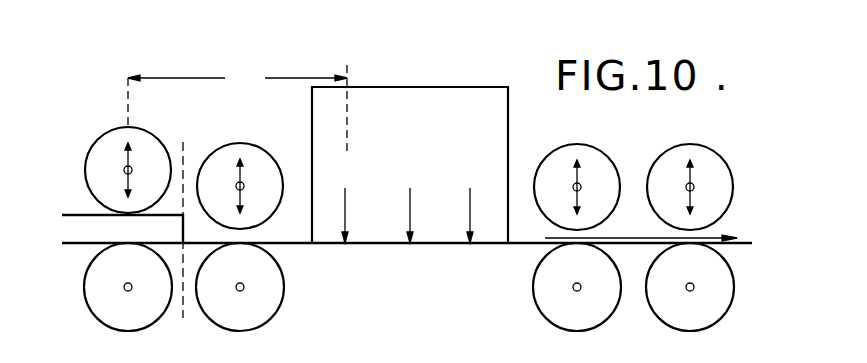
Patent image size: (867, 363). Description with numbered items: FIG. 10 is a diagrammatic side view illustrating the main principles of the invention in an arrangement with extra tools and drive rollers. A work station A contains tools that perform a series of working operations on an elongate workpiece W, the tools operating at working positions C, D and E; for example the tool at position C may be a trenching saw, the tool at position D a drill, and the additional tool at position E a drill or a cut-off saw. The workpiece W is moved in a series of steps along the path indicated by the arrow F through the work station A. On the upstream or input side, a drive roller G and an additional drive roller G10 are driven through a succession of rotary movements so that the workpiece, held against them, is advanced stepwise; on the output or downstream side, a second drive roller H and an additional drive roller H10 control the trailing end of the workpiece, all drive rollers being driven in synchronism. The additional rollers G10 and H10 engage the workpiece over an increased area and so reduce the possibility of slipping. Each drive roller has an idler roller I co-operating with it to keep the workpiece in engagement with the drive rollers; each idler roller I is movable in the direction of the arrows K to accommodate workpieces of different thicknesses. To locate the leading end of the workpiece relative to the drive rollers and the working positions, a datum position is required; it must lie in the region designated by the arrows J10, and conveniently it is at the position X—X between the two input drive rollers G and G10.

The idler roller I is at (103, 138).
The arrows indicating direction of idler roller movement K is at (417, 178).
The workpiece W is at (119, 202).
The drive roller G is at (98, 307).
The additional drive roller G10 is at (273, 298).
The second drive roller H is at (535, 290).
The additional drive roller H10 is at (720, 313).
The datum position X is at (183, 228).
The work station A is at (397, 220).
The arrows designating datum region J10 is at (237, 109).
The working position C is at (344, 202).
The working position D is at (409, 202).
The working position E is at (469, 202).
The arrow indicating path of workpiece F is at (642, 227).